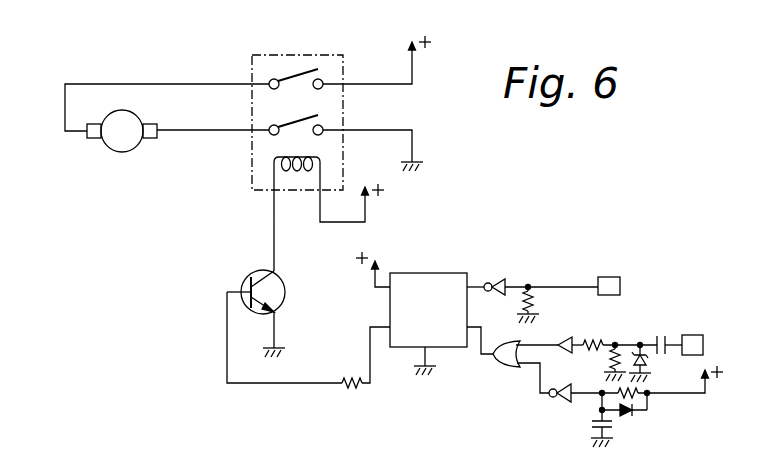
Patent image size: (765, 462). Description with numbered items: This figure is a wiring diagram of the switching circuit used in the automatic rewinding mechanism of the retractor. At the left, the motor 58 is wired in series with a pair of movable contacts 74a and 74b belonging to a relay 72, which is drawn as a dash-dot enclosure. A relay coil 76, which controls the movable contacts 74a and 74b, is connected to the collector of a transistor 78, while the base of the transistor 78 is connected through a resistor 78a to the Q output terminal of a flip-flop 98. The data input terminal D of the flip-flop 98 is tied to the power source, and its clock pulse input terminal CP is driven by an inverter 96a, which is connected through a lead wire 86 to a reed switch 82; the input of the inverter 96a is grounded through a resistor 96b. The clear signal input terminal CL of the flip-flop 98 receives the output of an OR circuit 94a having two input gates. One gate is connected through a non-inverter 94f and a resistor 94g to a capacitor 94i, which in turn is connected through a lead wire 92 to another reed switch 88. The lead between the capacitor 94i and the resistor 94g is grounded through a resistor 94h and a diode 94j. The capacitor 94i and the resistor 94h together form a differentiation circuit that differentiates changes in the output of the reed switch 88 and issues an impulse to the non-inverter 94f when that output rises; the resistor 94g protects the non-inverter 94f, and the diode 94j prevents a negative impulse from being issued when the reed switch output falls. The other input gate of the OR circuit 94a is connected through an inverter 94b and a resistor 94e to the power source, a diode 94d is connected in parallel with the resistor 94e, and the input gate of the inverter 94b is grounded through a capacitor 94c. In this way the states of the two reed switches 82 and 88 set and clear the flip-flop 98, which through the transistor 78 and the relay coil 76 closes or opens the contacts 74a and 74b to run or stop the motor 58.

The motor 58 is at (122, 152).
The relay 72 is at (247, 61).
The movable contact 74a is at (300, 72).
The movable contact 74b is at (306, 113).
The relay coil 76 is at (290, 171).
The transistor 78 is at (246, 281).
The resistor 78a is at (352, 386).
The reed switch 82 is at (604, 276).
The lead wire 86 is at (544, 285).
The reed switch 88 is at (690, 334).
The lead wire 92 is at (658, 337).
The OR circuit 94a is at (500, 366).
The inverter 94b is at (561, 404).
The capacitor 94c is at (613, 430).
The diode 94d is at (629, 416).
The resistor 94e is at (650, 400).
The non-inverter 94f is at (558, 341).
The resistor 94g is at (592, 344).
The resistor 94h is at (612, 357).
The capacitor 94i is at (641, 343).
The diode 94j is at (650, 393).
The inverter 96a is at (500, 277).
The resistor 96b is at (536, 307).
The flip-flop 98 is at (418, 272).